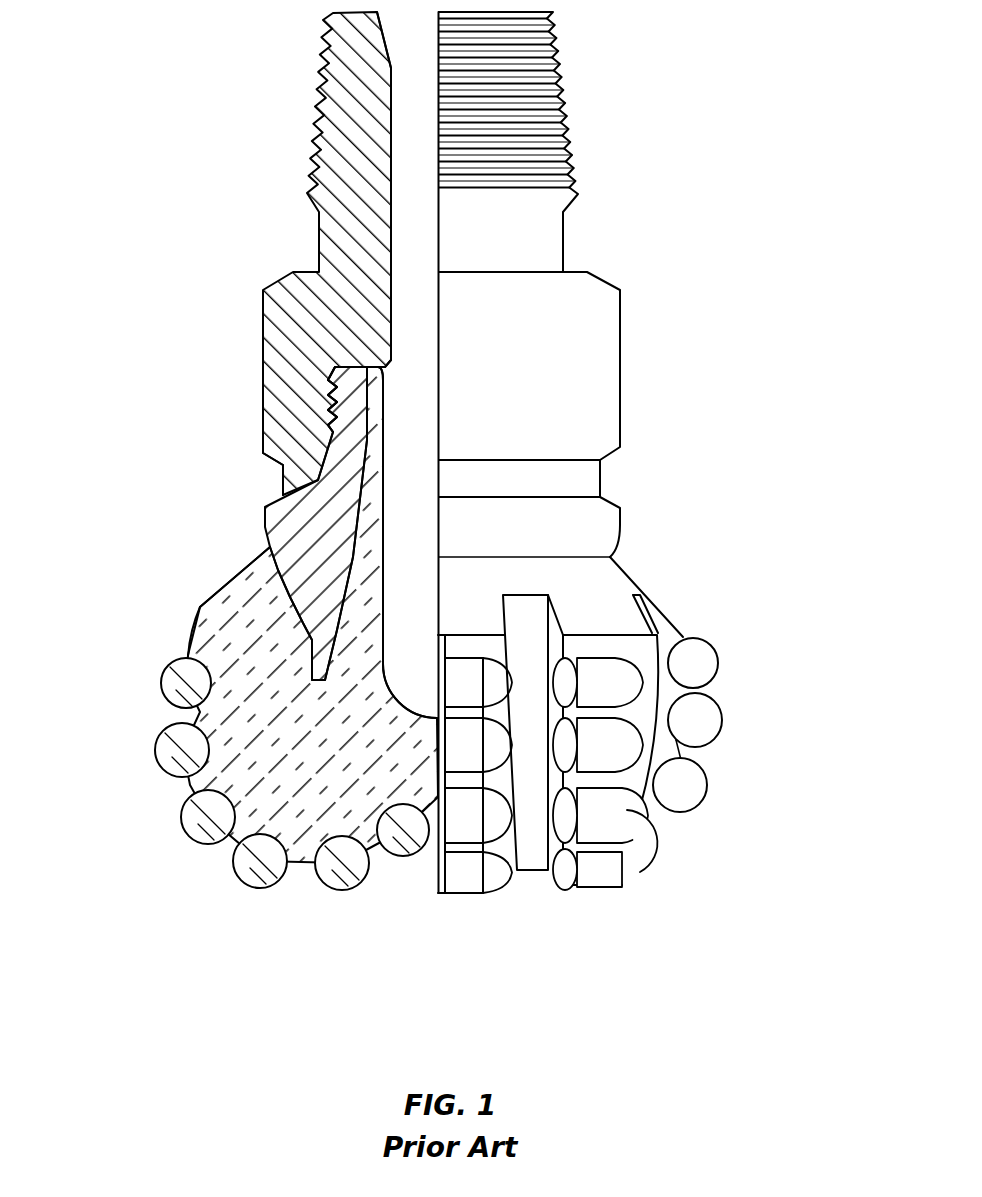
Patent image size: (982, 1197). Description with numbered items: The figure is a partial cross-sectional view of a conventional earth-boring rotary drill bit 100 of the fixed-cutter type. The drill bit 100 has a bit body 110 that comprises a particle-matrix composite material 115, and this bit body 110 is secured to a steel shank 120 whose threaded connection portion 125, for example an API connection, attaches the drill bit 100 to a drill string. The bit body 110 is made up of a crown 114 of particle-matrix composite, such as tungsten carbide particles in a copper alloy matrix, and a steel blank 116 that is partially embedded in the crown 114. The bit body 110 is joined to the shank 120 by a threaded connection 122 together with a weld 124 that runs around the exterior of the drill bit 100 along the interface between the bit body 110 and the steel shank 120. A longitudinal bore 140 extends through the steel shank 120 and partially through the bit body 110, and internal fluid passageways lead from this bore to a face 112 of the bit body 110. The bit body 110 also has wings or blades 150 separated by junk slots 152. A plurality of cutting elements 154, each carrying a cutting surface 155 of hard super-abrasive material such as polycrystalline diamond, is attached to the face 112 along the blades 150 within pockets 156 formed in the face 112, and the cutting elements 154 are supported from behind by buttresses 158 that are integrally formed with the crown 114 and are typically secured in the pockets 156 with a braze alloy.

The earth-boring drill bit 100 is at (176, 147).
The bit body 110 is at (742, 507).
The face 112 is at (155, 480).
The crown 114 is at (255, 592).
The particle-matrix composite material 115 is at (215, 643).
The steel blank 116 is at (281, 530).
The steel shank 120 is at (282, 362).
The threaded connection 122 is at (314, 401).
The weld 124 is at (293, 478).
The threaded connection portion 125 is at (303, 108).
The longitudinal bore 140 is at (417, 285).
The blades 150 is at (530, 612).
The junk slots 152 is at (533, 881).
The cutting elements 154 is at (205, 820).
The cutting surface 155 is at (560, 870).
The pockets 156 is at (160, 737).
The buttresses 158 is at (497, 870).